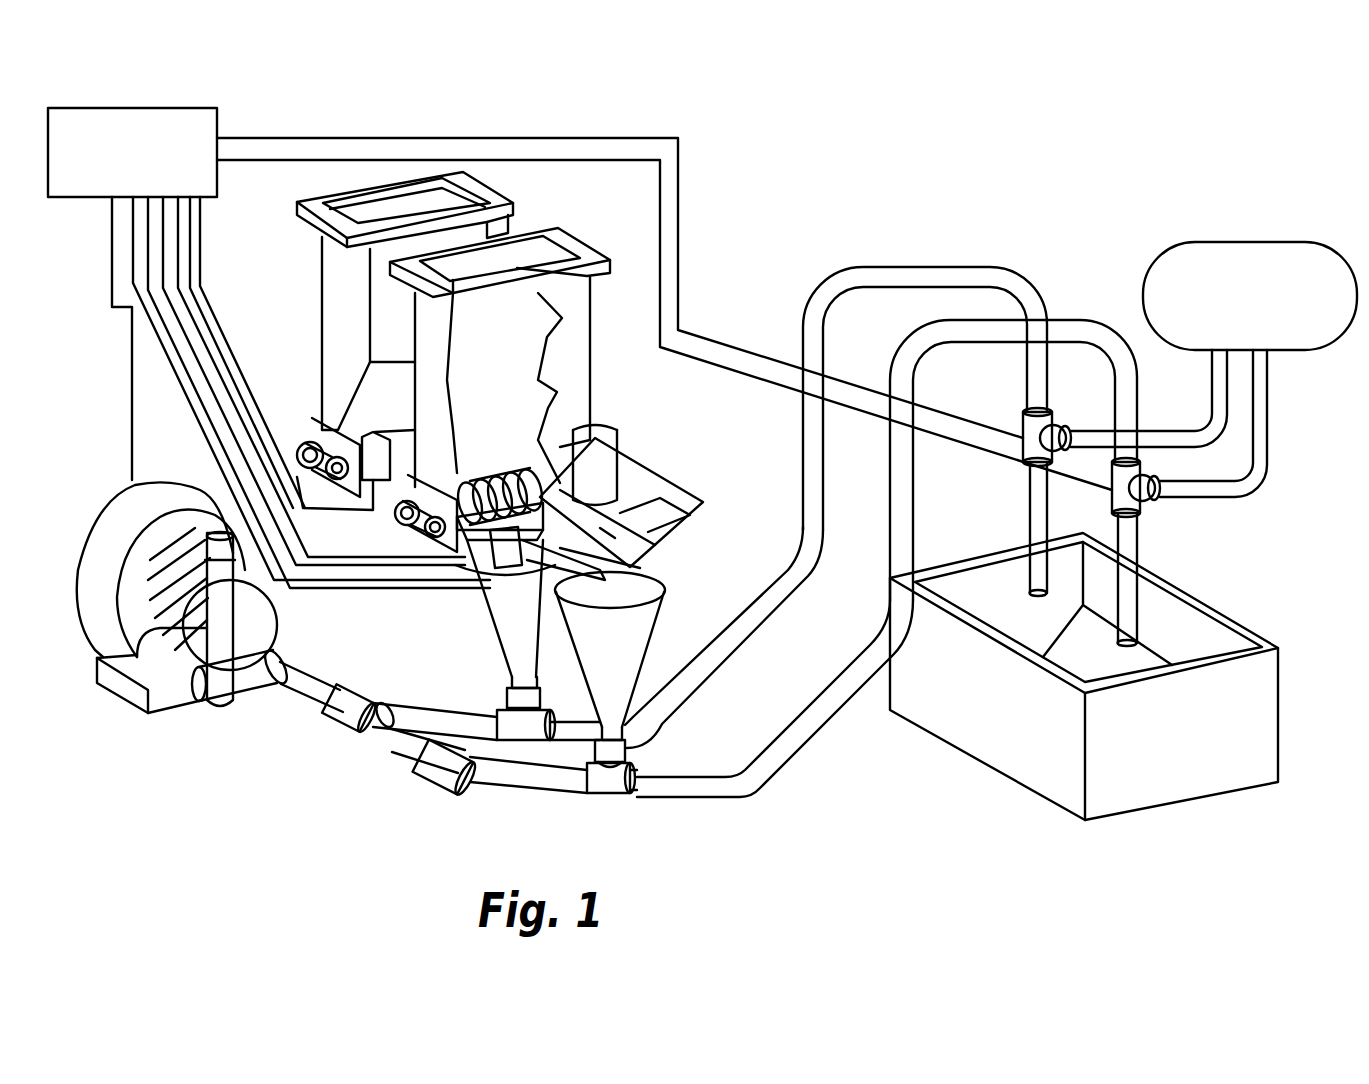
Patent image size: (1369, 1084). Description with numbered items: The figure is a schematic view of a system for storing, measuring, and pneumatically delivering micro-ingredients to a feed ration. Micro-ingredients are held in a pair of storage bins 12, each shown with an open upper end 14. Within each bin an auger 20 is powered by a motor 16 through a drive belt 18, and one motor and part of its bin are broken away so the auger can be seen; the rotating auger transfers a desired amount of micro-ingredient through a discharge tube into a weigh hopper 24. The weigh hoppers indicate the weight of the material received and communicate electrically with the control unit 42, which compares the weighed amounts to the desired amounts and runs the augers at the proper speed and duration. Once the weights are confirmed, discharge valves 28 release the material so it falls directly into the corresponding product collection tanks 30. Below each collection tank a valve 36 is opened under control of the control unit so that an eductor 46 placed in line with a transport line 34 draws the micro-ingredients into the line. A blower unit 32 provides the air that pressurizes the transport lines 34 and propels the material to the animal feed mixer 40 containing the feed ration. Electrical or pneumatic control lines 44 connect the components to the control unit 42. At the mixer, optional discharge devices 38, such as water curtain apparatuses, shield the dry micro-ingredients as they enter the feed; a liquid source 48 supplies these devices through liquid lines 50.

The storage bin 12 is at (340, 295).
The open upper end 14 is at (488, 195).
The motor 16 is at (640, 490).
The drive belt 18 is at (328, 425).
The auger 20 is at (487, 485).
The weigh hopper 24 is at (620, 470).
The discharge valve 28 is at (483, 545).
The product collection tank 30 is at (512, 610).
The blower unit 32 is at (105, 540).
The transport line 34 is at (308, 690).
The valve 36 is at (520, 700).
The discharge device 38 is at (1070, 412).
The animal feed mixer 40 is at (1192, 756).
The control unit 42 is at (104, 108).
The control line 44 is at (243, 140).
The eductor 46 is at (512, 760).
The liquid source 48 is at (1197, 262).
The liquid line 50 is at (1212, 405).